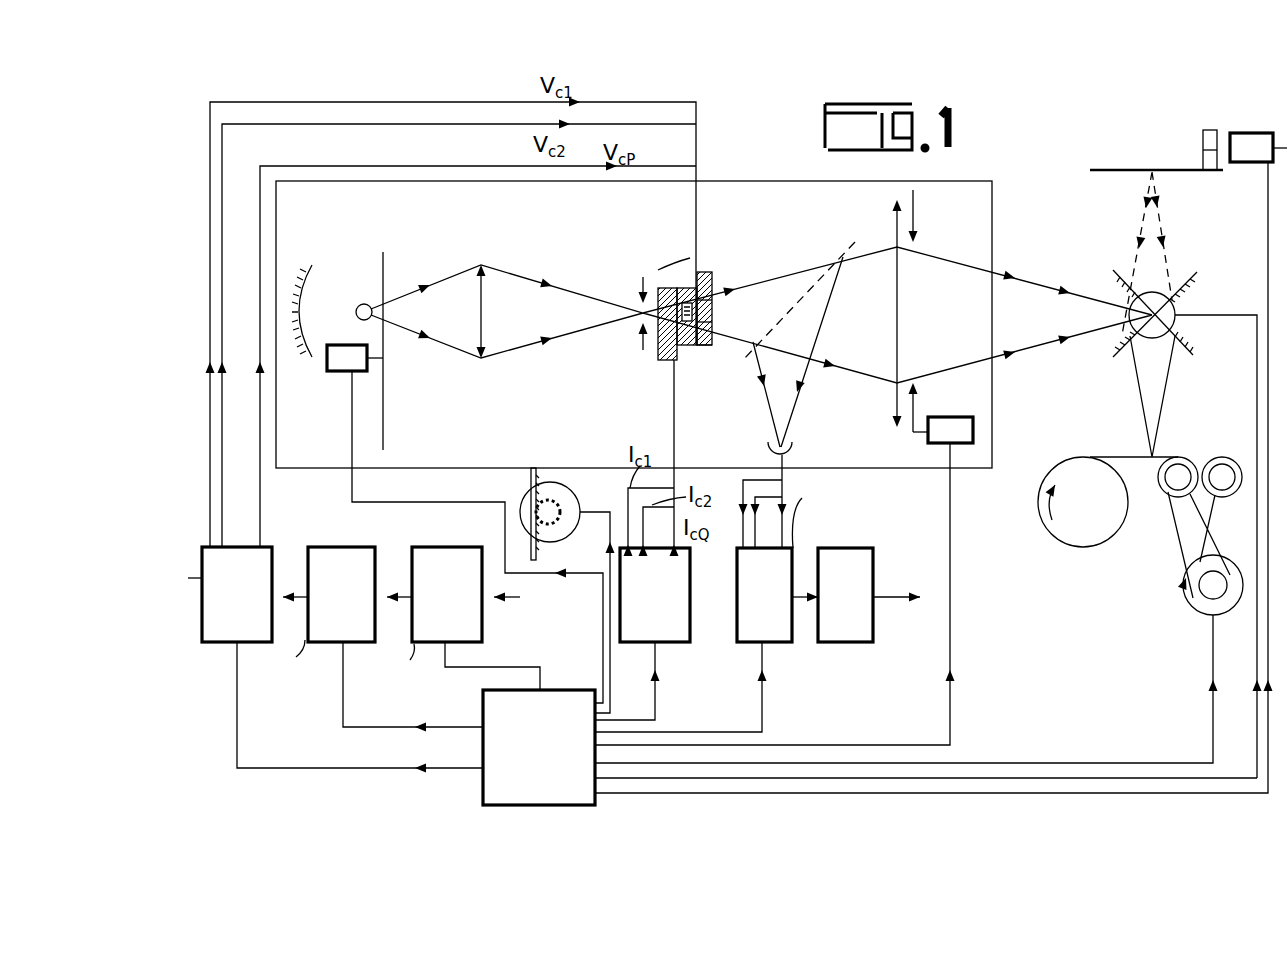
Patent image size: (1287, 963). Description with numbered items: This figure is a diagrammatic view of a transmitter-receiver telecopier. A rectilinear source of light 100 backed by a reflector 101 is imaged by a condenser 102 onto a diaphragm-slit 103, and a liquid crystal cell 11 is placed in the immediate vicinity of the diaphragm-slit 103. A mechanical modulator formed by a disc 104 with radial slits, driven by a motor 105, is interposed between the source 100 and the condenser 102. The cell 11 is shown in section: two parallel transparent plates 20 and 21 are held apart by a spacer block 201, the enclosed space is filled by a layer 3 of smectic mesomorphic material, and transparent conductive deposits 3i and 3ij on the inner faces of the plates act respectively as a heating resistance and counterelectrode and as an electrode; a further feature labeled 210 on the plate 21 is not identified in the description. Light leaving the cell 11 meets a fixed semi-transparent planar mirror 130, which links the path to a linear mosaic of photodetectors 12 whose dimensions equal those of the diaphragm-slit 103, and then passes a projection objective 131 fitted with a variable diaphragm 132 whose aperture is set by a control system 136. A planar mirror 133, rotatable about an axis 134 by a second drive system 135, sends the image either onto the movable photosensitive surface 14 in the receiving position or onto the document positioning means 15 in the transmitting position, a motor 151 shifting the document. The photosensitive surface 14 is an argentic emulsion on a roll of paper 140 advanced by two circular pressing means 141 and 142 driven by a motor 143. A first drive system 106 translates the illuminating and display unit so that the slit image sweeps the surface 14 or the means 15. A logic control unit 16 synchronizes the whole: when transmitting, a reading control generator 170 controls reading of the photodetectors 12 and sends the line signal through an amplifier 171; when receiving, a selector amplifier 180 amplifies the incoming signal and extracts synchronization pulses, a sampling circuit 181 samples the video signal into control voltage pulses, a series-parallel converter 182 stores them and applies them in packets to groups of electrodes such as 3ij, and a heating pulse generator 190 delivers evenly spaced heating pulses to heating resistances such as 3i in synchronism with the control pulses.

The rectilinear source of light 100 is at (358, 306).
The reflector 101 is at (306, 272).
The condenser 102 is at (482, 350).
The diaphragm-slit 103 is at (640, 320).
The disc 104 is at (385, 405).
The motor 105 is at (335, 372).
The first drive system 106 is at (560, 485).
The liquid crystal cell 11 is at (673, 254).
The linear mosaic of photodetectors 12 is at (792, 452).
The semi-transparent planar mirror 130 is at (826, 272).
The projection objective 131 is at (897, 410).
The variable diaphragm 132 is at (918, 412).
The planar mirror 133 is at (1118, 345).
The axis 134 is at (1170, 320).
The second drive system 135 is at (1160, 285).
The diaphragm control system 136 is at (975, 436).
The photosensitive surface 14 is at (1110, 457).
The roll of paper 140 is at (1040, 530).
The circular pressing means 141 is at (1180, 458).
The circular pressing means 142 is at (1222, 458).
The motor 143 is at (1183, 597).
The positioning means 15 is at (1178, 172).
The motor 151 is at (1242, 163).
The logic control unit 16 is at (548, 690).
The reading control generator 170 is at (775, 645).
The amplifier 171 is at (855, 645).
The selector amplifier 180 is at (440, 548).
The sampling circuit 181 is at (352, 548).
The series-parallel converter 182 is at (276, 552).
The heating pulse generator 190 is at (675, 645).
The transparent solid plate 20 is at (660, 362).
The spacer block 201 is at (705, 345).
The transparent solid plate 21 is at (714, 282).
The electrode layer 210 is at (712, 298).
The layer of mesomorphic material 3 is at (700, 322).
The transparent conductive deposit 3i is at (672, 368).
The transparent conductive deposit 3ij is at (687, 350).